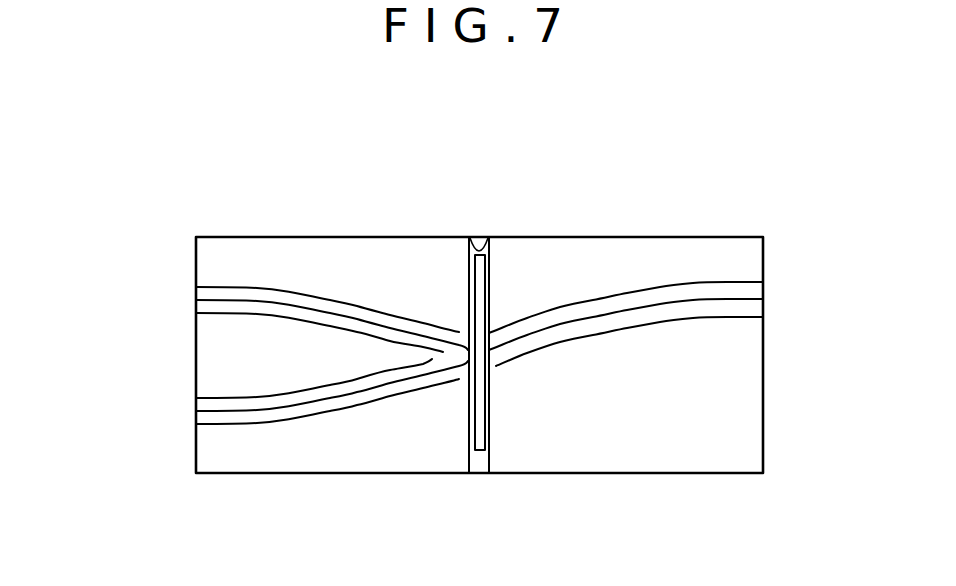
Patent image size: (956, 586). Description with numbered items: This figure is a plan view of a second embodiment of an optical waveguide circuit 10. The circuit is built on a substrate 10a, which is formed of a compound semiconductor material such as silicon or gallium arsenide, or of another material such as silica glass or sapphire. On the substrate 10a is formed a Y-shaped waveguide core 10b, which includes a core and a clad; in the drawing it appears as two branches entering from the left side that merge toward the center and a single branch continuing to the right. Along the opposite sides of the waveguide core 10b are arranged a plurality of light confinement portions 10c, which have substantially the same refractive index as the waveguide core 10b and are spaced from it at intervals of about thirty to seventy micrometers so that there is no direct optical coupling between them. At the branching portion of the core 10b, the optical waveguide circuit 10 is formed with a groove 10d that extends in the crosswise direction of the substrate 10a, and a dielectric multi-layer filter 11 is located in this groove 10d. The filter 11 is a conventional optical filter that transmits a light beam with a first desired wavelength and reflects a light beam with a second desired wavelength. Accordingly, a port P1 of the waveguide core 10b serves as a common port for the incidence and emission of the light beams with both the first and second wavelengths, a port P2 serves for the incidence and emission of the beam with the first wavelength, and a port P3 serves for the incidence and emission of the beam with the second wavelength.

The optical waveguide circuit 10 is at (423, 237).
The substrate 10a is at (648, 432).
The waveguide core 10b is at (337, 310).
The light confinement portions 10c is at (247, 313).
The groove 10d is at (477, 238).
The dielectric multi-layer filter 11 is at (477, 450).
The port P1 is at (196, 410).
The port P2 is at (763, 298).
The port P3 is at (196, 300).